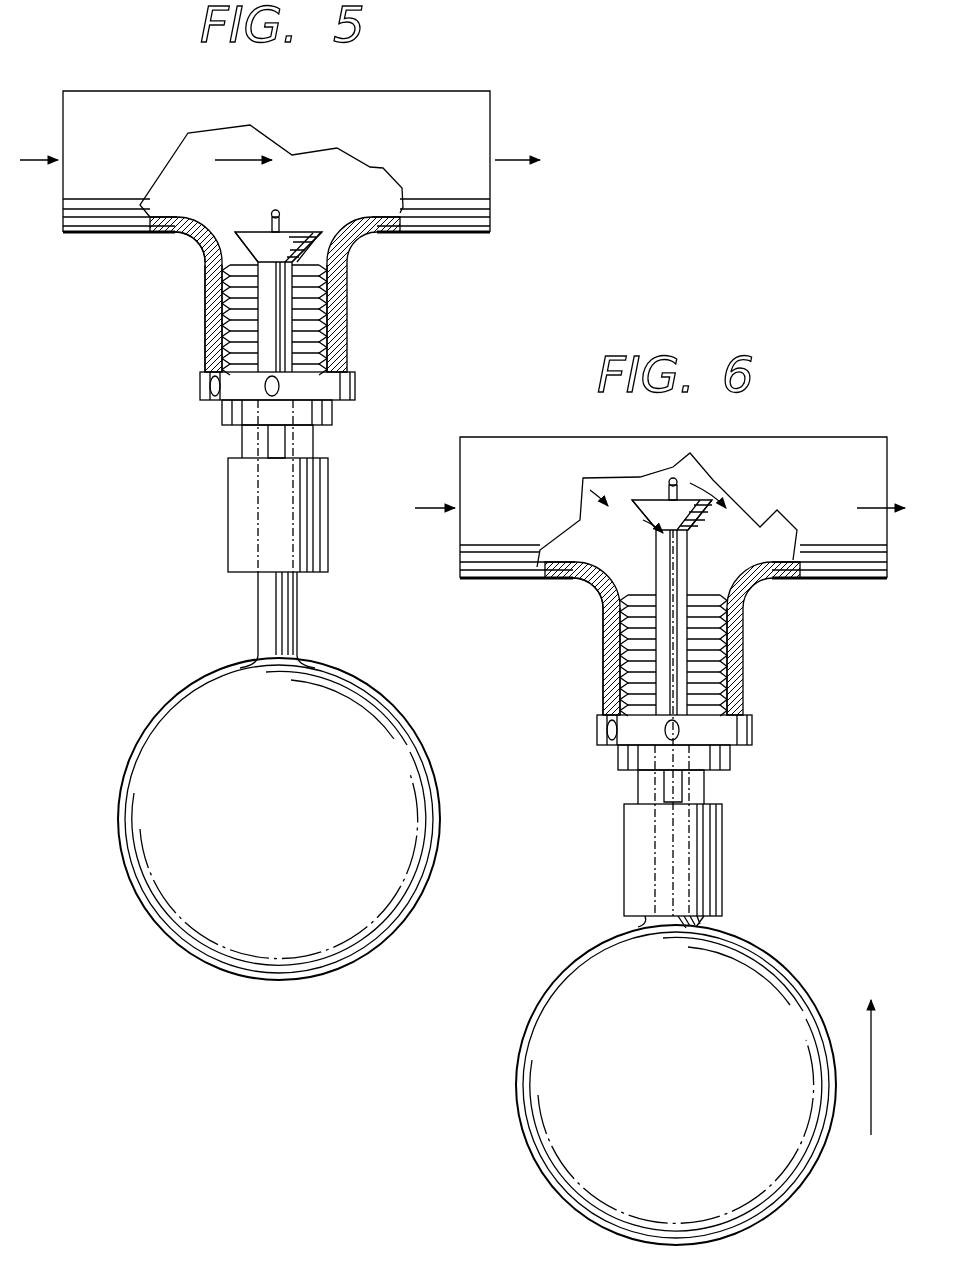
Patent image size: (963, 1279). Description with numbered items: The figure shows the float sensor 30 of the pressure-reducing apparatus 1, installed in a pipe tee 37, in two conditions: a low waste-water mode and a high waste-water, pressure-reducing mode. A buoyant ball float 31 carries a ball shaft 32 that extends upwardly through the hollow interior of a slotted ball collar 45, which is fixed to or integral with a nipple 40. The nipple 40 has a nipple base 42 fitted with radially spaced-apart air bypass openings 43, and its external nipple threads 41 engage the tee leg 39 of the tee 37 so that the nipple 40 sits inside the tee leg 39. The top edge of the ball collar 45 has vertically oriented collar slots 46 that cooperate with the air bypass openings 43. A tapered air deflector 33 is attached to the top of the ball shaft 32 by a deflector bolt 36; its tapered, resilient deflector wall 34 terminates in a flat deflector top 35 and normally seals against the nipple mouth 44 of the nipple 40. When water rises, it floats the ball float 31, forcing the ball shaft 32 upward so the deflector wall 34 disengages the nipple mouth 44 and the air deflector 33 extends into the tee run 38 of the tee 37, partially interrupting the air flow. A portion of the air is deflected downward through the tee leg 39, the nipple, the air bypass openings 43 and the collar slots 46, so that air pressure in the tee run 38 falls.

In FIG. 5, the pressure-reducing apparatus 1 is at (99, 319).
In FIG. 6, the pressure-reducing apparatus 1 is at (586, 620).
In FIG. 5, the float sensor 30 is at (213, 483).
In FIG. 6, the float sensor 30 is at (770, 725).
In FIG. 5, the ball float 31 is at (253, 712).
In FIG. 6, the ball float 31 is at (711, 1011).
In FIG. 5, the ball shaft 32 is at (222, 303).
In FIG. 6, the ball shaft 32 is at (676, 578).
In FIG. 5, the air deflector 33 is at (234, 226).
In FIG. 6, the air deflector 33 is at (648, 512).
In FIG. 5, the deflector wall 34 is at (293, 233).
In FIG. 6, the deflector wall 34 is at (668, 517).
In FIG. 5, the deflector top 35 is at (318, 233).
In FIG. 6, the deflector top 35 is at (701, 478).
In FIG. 5, the deflector bolt 36 is at (273, 213).
In FIG. 6, the deflector bolt 36 is at (670, 480).
In FIG. 5, the tee 37 is at (106, 242).
In FIG. 6, the tee 37 is at (486, 582).
In FIG. 5, the tee run 38 is at (375, 212).
In FIG. 6, the tee run 38 is at (773, 548).
In FIG. 5, the tee leg 39 is at (215, 352).
In FIG. 6, the tee leg 39 is at (605, 667).
In FIG. 5, the nipple 40 is at (342, 308).
In FIG. 6, the nipple 40 is at (713, 682).
In FIG. 5, the nipple threads 41 is at (220, 347).
In FIG. 6, the nipple threads 41 is at (745, 648).
In FIG. 5, the nipple base 42 is at (345, 413).
In FIG. 6, the nipple base 42 is at (735, 775).
In FIG. 5, the air bypass openings 43 is at (208, 402).
In FIG. 6, the air bypass openings 43 is at (668, 731).
In FIG. 5, the nipple mouth 44 is at (205, 248).
In FIG. 6, the nipple mouth 44 is at (605, 575).
In FIG. 5, the ball collar 45 is at (224, 522).
In FIG. 6, the ball collar 45 is at (619, 862).
In FIG. 5, the collar slots 46 is at (268, 450).
In FIG. 6, the collar slots 46 is at (625, 800).